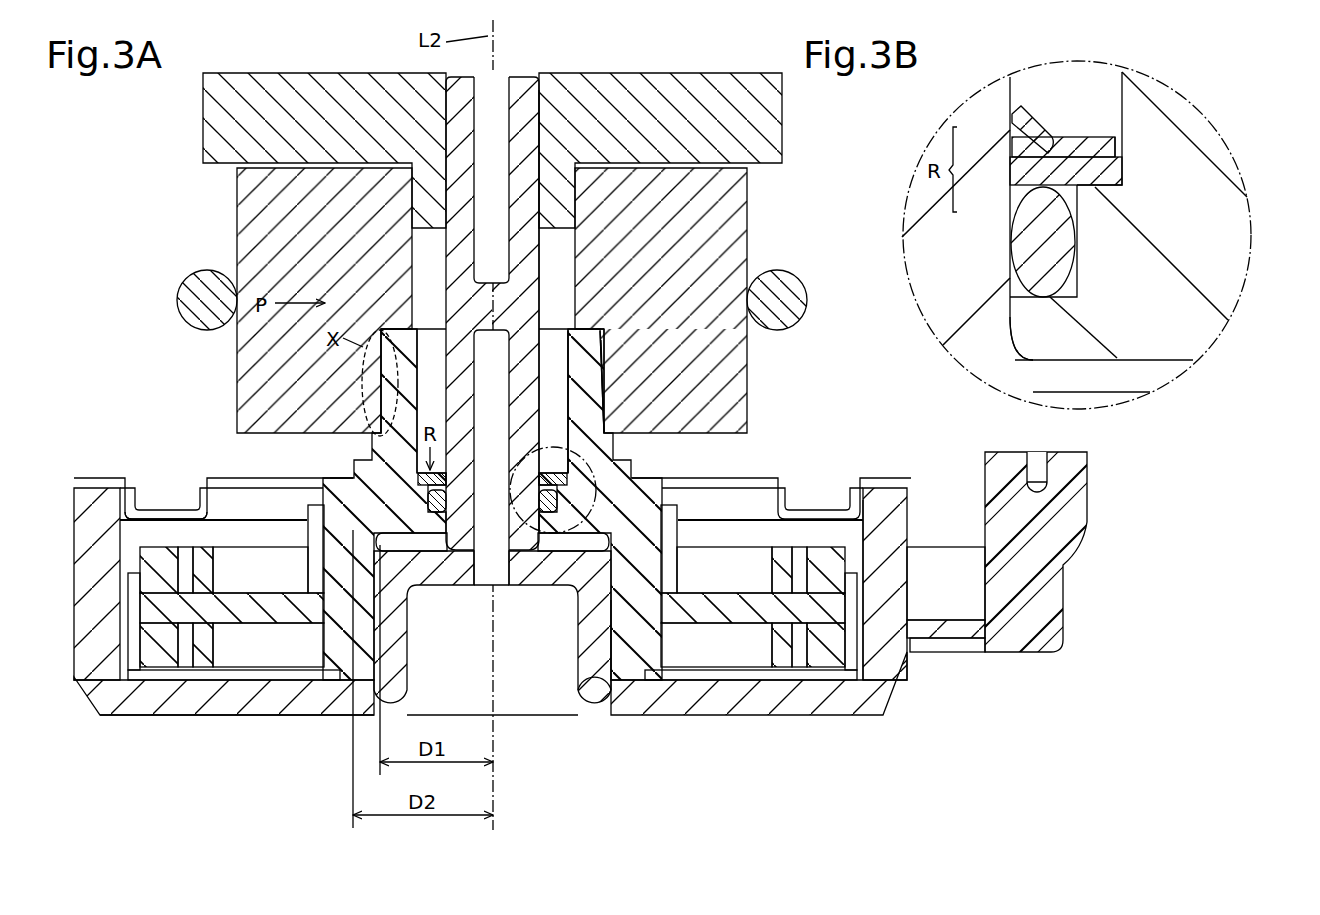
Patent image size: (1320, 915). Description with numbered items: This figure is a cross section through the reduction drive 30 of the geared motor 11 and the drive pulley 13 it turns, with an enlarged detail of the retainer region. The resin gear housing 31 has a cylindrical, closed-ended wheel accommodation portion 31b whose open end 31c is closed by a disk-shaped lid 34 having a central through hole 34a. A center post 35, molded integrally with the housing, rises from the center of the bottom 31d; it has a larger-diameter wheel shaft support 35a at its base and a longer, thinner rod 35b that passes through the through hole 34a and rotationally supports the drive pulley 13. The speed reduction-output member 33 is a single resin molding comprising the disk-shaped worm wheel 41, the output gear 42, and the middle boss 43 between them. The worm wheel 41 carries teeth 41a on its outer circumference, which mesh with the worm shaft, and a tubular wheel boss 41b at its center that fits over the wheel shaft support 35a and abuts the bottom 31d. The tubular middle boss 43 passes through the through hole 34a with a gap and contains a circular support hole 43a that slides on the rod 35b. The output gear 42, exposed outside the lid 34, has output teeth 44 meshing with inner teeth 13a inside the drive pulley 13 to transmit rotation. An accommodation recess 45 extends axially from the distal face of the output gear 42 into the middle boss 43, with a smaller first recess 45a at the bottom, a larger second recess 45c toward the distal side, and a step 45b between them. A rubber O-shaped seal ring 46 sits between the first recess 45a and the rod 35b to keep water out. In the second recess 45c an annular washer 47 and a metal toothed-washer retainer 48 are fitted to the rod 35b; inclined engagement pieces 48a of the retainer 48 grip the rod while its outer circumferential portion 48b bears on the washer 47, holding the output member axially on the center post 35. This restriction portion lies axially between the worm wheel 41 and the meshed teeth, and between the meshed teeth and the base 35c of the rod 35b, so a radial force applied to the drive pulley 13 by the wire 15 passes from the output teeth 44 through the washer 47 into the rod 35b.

In FIG. 3A, the motor 11 is at (860, 738).
In FIG. 3A, the drive pulley 13 is at (237, 195).
In FIG. 3A, the inner teeth 13a is at (605, 403).
In FIG. 3A, the wire 15 is at (178, 300).
In FIG. 3A, the reduction drive 30 is at (894, 764).
In FIG. 3A, the gear housing 31 is at (905, 688).
In FIG. 3A, the wheel accommodation portion 31b is at (862, 530).
In FIG. 3A, the open end 31c is at (146, 498).
In FIG. 3A, the bottom 31d is at (316, 718).
In FIG. 3A, the speed reduction-output member 33 is at (713, 681).
In FIG. 3A, the lid 34 is at (228, 478).
In FIG. 3A, the through hole 34a is at (347, 473).
In FIG. 3A, the center post 35 is at (522, 77).
In FIG. 3A, the wheel shaft support 35a is at (402, 633).
In FIG. 3A, the rod 35b is at (530, 284).
In FIG. 3B, the rod 35b is at (990, 102).
In FIG. 3A, the base 35c is at (527, 553).
In FIG. 3A, the worm wheel 41 is at (757, 547).
In FIG. 3A, the teeth 41a is at (851, 603).
In FIG. 3A, the wheel boss 41b is at (628, 668).
In FIG. 3A, the output gear 42 is at (602, 387).
In FIG. 3A, the middle boss 43 is at (633, 463).
In FIG. 3B, the middle boss 43 is at (1252, 258).
In FIG. 3A, the support hole 43a is at (460, 552).
In FIG. 3B, the support hole 43a is at (1010, 316).
In FIG. 3A, the output teeth 44 is at (600, 346).
In FIG. 3A, the accommodation recess 45 is at (421, 347).
In FIG. 3B, the first recess 45a is at (1080, 278).
In FIG. 3B, the step 45b is at (1124, 178).
In FIG. 3B, the second recess 45c is at (1119, 71).
In FIG. 3B, the seal ring 46 is at (1076, 230).
In FIG. 3B, the washer 47 is at (1018, 183).
In FIG. 3B, the retainer 48 is at (1039, 118).
In FIG. 3B, the engagement pieces 48a is at (1040, 122).
In FIG. 3B, the outer circumferential portion 48b is at (1087, 140).